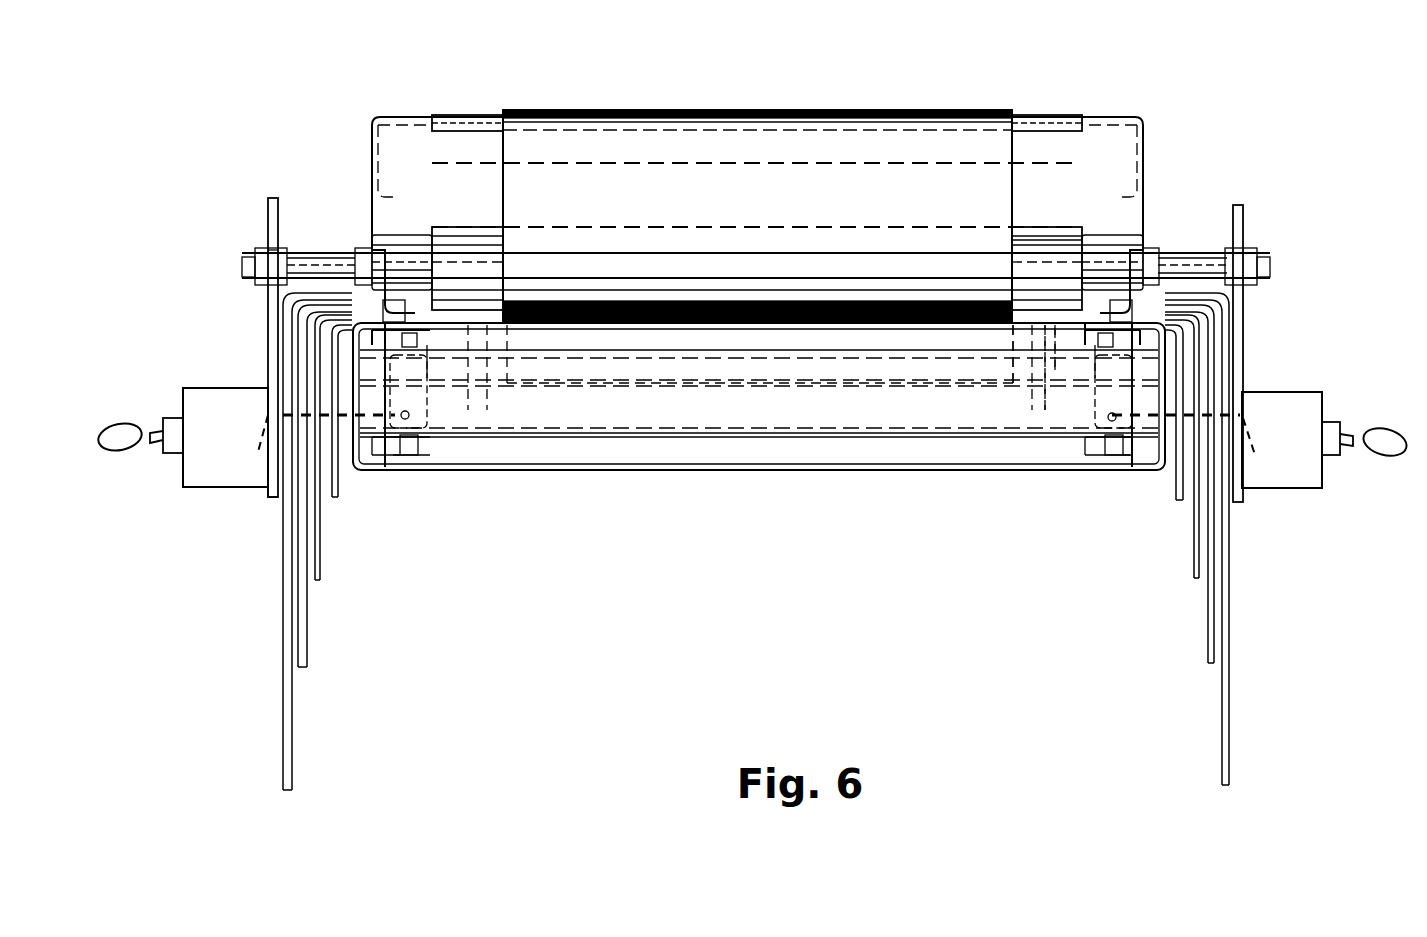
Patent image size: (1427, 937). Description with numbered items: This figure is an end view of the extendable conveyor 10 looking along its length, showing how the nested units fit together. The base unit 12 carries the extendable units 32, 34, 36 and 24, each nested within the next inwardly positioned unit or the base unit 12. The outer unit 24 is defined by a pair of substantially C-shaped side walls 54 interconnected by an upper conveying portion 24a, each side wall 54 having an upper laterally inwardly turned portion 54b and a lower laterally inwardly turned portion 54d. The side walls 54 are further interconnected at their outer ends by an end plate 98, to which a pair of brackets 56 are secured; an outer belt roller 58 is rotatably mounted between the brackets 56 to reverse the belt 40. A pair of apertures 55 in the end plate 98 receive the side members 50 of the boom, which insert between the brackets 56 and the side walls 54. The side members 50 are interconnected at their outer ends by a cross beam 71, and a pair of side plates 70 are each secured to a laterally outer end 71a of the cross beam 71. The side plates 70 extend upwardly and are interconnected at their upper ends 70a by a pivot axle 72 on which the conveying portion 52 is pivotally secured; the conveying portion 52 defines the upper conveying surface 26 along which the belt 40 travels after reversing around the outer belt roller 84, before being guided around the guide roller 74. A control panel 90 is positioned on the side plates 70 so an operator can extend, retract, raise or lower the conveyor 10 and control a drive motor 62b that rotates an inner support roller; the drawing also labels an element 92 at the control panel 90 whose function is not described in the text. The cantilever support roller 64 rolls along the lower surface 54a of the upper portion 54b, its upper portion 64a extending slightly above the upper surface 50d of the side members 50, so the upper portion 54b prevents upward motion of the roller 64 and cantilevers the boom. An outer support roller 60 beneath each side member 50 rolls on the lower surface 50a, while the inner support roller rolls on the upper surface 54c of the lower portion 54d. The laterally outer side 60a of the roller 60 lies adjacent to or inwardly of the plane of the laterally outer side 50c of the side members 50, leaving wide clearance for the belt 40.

The extendable conveyor 10 is at (311, 58).
The base unit 12 is at (292, 737).
The outer extendable unit 24 is at (390, 468).
The upper conveying portion 24a is at (1085, 320).
The upper conveying surface 26 is at (1105, 117).
The extendable unit 32 is at (307, 605).
The extendable unit 34 is at (322, 535).
The extendable unit 36 is at (338, 492).
The conveyor belt 40 is at (737, 108).
The side members 50 is at (430, 378).
The lower surface of side members 50a is at (425, 450).
The laterally outer side of side members 50c is at (395, 400).
The upper surface of side members 50d is at (410, 340).
The conveying portion 52 is at (1100, 330).
The side walls 54 is at (1148, 458).
The lower surface of upper inwardly turned portion 54a is at (400, 345).
The upper laterally inwardly turned portion 54b is at (385, 330).
The upper surface of lower inwardly turned portion 54c is at (1125, 458).
The lower laterally inwardly turned portion 54d is at (418, 450).
The apertures 55 is at (1052, 415).
The brackets 56 is at (1047, 418).
The outer belt roller 58 is at (1022, 382).
The outer support roller 60 is at (405, 465).
The laterally outer side of outer support roller 60a is at (385, 468).
The drive motor 62b is at (430, 430).
The cantilever support roller 64 is at (415, 318).
The upper portion of cantilever support roller 64a is at (395, 318).
The side plates 70 is at (272, 198).
The upper ends of side plates 70a is at (268, 248).
The cross beam 71 is at (843, 418).
The laterally outer end of cross beam 71a is at (276, 498).
The pivot axle 72 is at (257, 268).
The guide roller 74 is at (1040, 108).
The outer belt roller 84 is at (1045, 247).
The control panel 90 is at (190, 467).
The motor pivot 92 is at (255, 445).
The end plate 98 is at (715, 470).